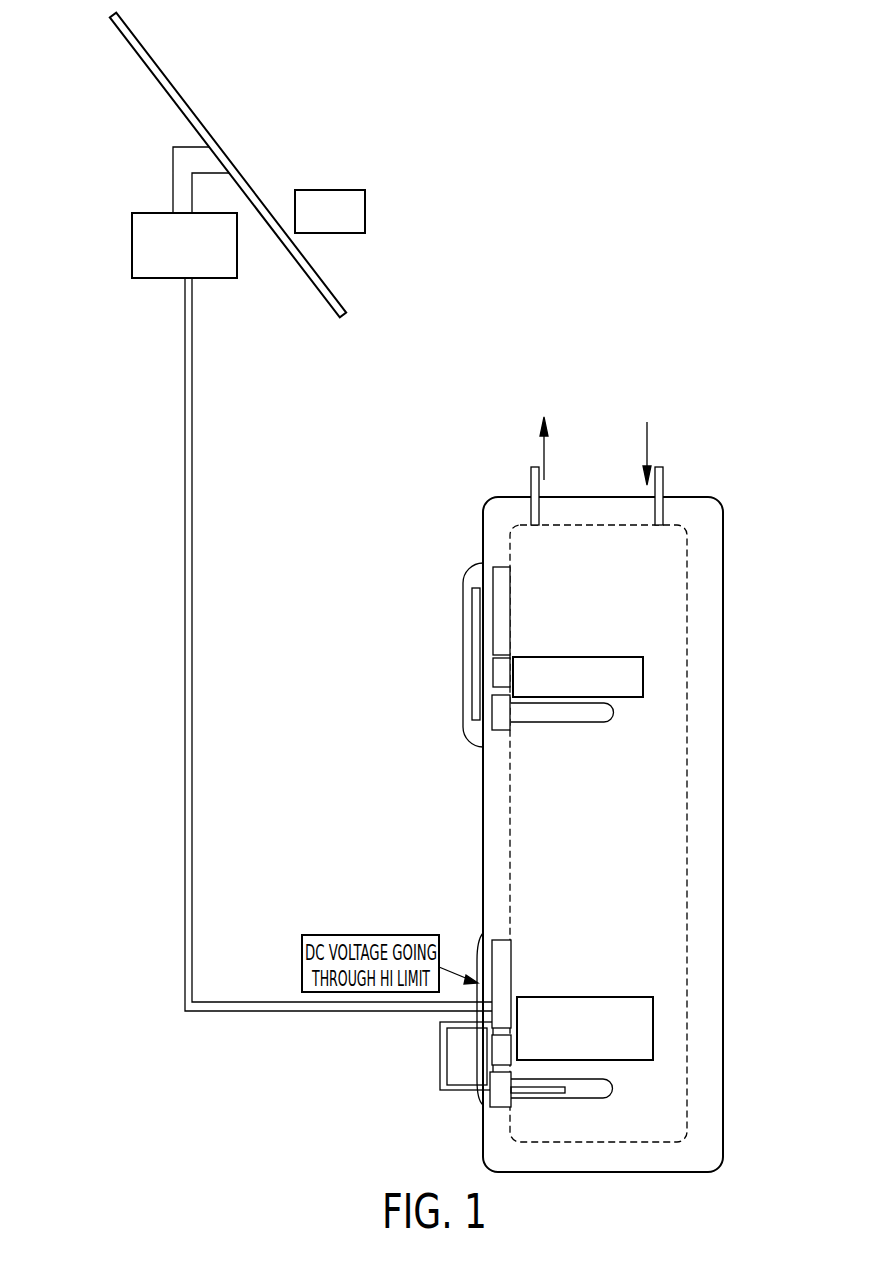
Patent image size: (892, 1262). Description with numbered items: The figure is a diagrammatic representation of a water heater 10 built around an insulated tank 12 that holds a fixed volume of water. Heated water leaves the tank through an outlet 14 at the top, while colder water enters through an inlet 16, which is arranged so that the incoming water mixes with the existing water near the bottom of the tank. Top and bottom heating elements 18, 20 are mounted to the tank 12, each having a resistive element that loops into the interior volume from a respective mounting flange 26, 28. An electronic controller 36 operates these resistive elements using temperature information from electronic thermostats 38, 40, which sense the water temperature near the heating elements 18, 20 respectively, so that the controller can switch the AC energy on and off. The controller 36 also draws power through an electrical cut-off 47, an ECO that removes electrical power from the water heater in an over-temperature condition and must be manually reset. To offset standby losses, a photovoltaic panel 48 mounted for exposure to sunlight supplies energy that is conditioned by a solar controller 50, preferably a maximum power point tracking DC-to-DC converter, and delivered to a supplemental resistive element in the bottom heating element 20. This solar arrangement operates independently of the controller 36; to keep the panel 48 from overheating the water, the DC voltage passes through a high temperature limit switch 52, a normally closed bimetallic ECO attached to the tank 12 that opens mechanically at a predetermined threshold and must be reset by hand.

The water heater 10 is at (735, 417).
The insulated tank 12 is at (723, 630).
The outlet 14 is at (531, 495).
The inlet 16 is at (663, 487).
The top heating element 18 is at (568, 712).
The bottom heating element 20 is at (615, 1088).
The mounting flange 26 is at (492, 717).
The mounting flange 28 is at (491, 1098).
The electronic controller 36 is at (475, 645).
The electronic thermostat 38 is at (493, 677).
The electronic thermostat 40 is at (493, 1057).
The electrical cut-off (ECO) 47 is at (493, 598).
The photovoltaic panel 48 is at (178, 90).
The solar controller 50 is at (132, 240).
The high temperature limit switch 52 is at (493, 1025).